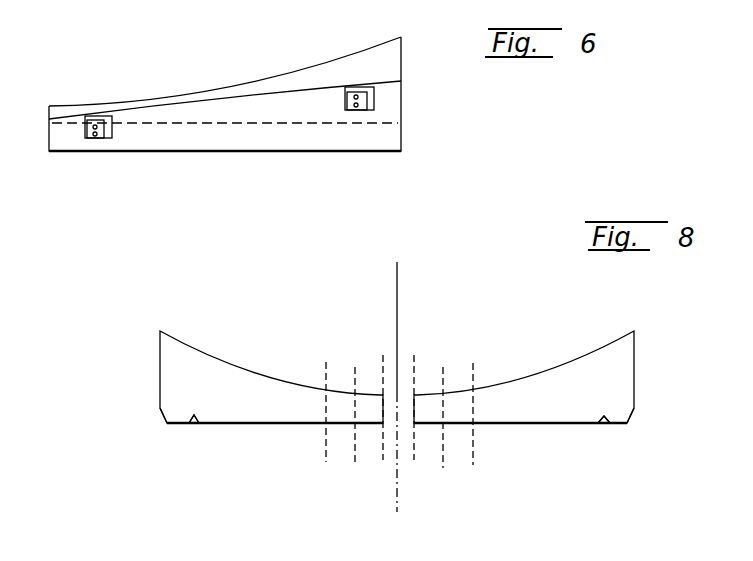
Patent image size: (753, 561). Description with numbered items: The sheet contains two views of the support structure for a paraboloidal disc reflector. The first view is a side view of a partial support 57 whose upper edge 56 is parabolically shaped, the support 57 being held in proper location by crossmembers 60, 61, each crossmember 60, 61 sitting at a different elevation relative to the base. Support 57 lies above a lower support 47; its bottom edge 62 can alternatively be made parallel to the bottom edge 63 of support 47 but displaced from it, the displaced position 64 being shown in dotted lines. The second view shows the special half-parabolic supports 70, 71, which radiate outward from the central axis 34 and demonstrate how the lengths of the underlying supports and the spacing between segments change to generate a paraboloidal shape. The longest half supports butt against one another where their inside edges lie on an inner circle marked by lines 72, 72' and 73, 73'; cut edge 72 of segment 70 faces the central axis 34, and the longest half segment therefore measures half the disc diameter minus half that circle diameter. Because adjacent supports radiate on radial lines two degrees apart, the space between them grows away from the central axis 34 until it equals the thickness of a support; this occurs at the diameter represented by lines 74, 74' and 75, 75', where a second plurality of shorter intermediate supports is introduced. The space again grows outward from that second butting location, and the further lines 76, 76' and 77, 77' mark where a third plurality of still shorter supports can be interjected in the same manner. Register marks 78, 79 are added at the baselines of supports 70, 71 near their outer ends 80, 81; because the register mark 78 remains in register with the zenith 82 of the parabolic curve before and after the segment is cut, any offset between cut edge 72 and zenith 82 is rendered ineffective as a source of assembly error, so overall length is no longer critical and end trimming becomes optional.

In FIG. 6, the support 47 is at (162, 145).
In FIG. 6, the upper edge 56 is at (276, 68).
In FIG. 6, the support 57 is at (351, 72).
In FIG. 6, the crossmember 60 is at (350, 112).
In FIG. 6, the crossmember 61 is at (88, 140).
In FIG. 6, the bottom edge 62 is at (292, 87).
In FIG. 6, the bottom edge 63 is at (254, 152).
In FIG. 6, the displaced bottom edge position 64 is at (184, 123).
In FIG. 8, the half-parabolic support 70 is at (183, 366).
In FIG. 8, the half-parabolic support 71 is at (588, 370).
In FIG. 8, the cut edge 72 is at (367, 447).
In FIG. 8, the inside edge line 73 is at (422, 428).
In FIG. 8, the butting diameter line 74 is at (463, 442).
In FIG. 8, the butting diameter line 75 is at (332, 439).
In FIG. 8, the fold line 76 is at (501, 423).
In FIG. 8, the fold line 77 is at (296, 430).
In FIG. 8, the inside edge line 72' is at (373, 334).
In FIG. 8, the inside edge line 73' is at (432, 329).
In FIG. 8, the butting diameter line 74' is at (463, 338).
In FIG. 8, the butting diameter line 75' is at (332, 347).
In FIG. 8, the fold line extension 76' is at (496, 361).
In FIG. 8, the fold line extension 77' is at (297, 363).
In FIG. 8, the register mark 78 is at (194, 426).
In FIG. 8, the notch 79 is at (604, 427).
In FIG. 8, the corner 80 is at (160, 415).
In FIG. 8, the corner 81 is at (635, 418).
In FIG. 8, the zenith 82 is at (158, 333).
In FIG. 8, the central axis 34 is at (397, 512).